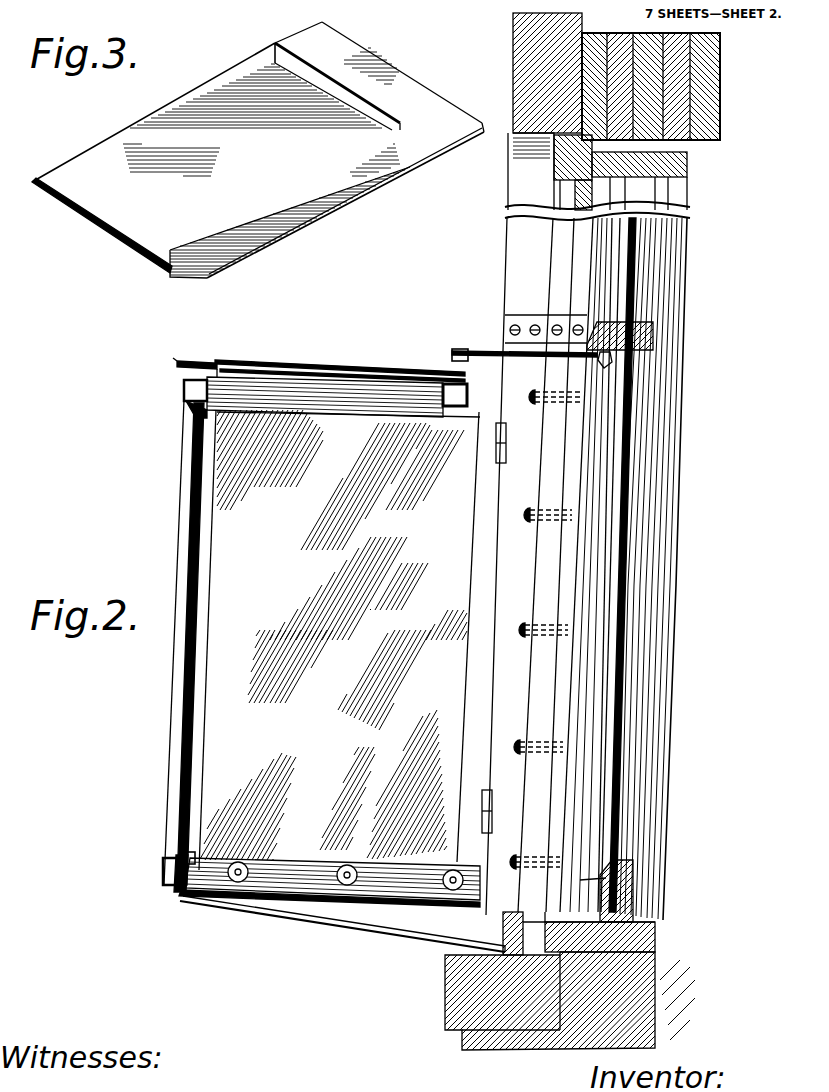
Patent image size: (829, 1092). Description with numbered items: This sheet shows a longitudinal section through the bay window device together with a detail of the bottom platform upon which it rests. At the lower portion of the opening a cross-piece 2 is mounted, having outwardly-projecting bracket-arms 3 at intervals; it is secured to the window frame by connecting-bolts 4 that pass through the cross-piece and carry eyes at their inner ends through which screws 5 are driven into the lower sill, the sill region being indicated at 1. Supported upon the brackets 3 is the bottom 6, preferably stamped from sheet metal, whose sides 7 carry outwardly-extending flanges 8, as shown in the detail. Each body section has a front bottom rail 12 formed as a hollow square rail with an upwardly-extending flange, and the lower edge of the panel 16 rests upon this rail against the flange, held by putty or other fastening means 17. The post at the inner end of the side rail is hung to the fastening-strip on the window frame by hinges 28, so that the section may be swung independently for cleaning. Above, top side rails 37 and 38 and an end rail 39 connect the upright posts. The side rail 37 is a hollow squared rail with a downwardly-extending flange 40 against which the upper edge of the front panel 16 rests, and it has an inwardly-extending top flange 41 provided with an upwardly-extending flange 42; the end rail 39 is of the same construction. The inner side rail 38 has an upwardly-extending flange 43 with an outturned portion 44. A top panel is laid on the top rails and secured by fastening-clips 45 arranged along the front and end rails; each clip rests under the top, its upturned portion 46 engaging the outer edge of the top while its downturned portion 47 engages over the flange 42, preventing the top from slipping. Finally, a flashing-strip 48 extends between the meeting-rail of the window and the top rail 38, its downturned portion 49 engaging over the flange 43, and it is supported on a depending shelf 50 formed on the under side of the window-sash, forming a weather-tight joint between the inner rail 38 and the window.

In FIG. 2, the base block 1 is at (445, 990).
In FIG. 2, the cross-piece 2 is at (503, 930).
In FIG. 2, the bracket-arms 3 is at (370, 927).
In FIG. 2, the connecting-bolts 4 is at (520, 918).
In FIG. 2, the screws 5 is at (660, 935).
In FIG. 3, the bottom 6 is at (85, 222).
In FIG. 2, the bottom 6 is at (210, 897).
In FIG. 3, the sides 7 is at (183, 265).
In FIG. 3, the flanges 8 is at (236, 265).
In FIG. 2, the front bottom rail 12 is at (163, 880).
In FIG. 2, the panel 16 is at (200, 530).
In FIG. 2, the putty or other fastening means 17 is at (190, 858).
In FIG. 2, the hinges 28 is at (506, 440).
In FIG. 2, the top side rail 37 is at (190, 403).
In FIG. 2, the top side rail 38 is at (452, 406).
In FIG. 2, the end rail 39 is at (345, 420).
In FIG. 2, the downwardly-extending flange 40 is at (235, 420).
In FIG. 2, the top flange 41 is at (250, 395).
In FIG. 2, the upwardly-extending flange 42 is at (184, 384).
In FIG. 2, the upwardly-extending flange 43 is at (480, 378).
In FIG. 2, the outturned portion 44 is at (465, 352).
In FIG. 2, the fastening-clips 45 is at (245, 345).
In FIG. 2, the upturned portion 46 is at (178, 360).
In FIG. 2, the downturned portion 47 is at (250, 370).
In FIG. 2, the flashing-strip 48 is at (512, 340).
In FIG. 2, the downturned portion 49 is at (452, 352).
In FIG. 2, the depending shelf 50 is at (604, 368).